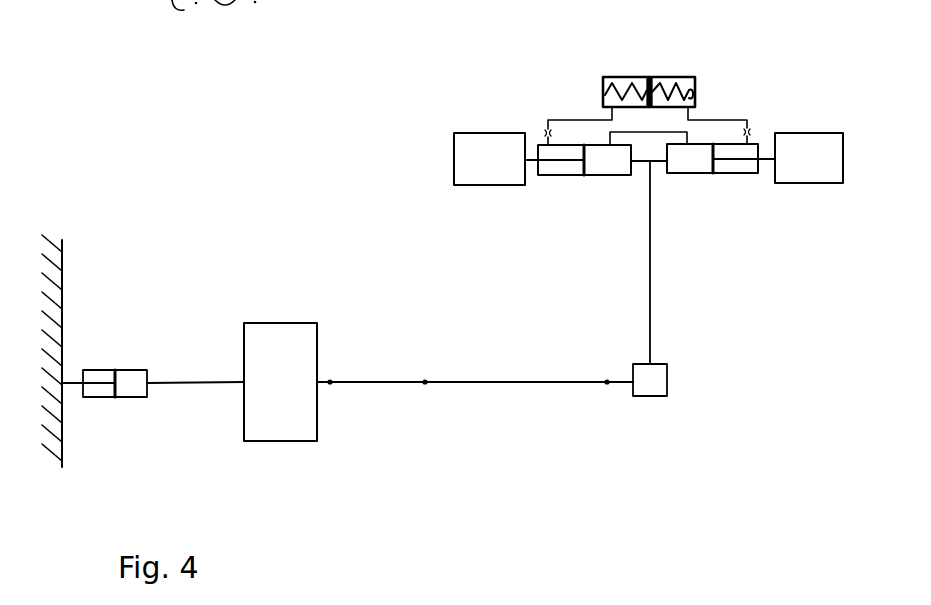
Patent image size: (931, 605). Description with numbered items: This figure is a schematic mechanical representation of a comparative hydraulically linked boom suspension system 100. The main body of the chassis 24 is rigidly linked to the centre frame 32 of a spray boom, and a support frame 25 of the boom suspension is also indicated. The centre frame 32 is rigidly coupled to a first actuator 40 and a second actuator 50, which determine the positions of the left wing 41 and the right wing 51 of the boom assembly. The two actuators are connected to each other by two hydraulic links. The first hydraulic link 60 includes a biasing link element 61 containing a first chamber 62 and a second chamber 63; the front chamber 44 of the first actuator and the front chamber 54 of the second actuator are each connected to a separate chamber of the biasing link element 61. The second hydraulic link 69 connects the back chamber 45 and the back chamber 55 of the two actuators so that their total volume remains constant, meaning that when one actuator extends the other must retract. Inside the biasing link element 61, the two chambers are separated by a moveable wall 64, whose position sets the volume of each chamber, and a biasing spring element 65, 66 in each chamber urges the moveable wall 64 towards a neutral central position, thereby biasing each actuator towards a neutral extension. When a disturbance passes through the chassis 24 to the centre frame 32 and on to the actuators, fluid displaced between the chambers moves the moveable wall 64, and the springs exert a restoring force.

The hydraulically linked boom suspension system 100 is at (320, 91).
The chassis 24 is at (280, 382).
The support frame 25 is at (331, 384).
The centre frame 32 is at (651, 389).
The first actuator 40 is at (562, 175).
The left wing 41 is at (496, 159).
The front chamber 44 is at (547, 170).
The back chamber 45 is at (603, 168).
The second actuator 50 is at (725, 176).
The right wing 51 is at (800, 158).
The front chamber 54 is at (752, 170).
The back chamber 55 is at (690, 167).
The first hydraulic link 60 is at (573, 118).
The biasing link element 61 is at (664, 65).
The first chamber 62 is at (618, 78).
The second chamber 63 is at (682, 82).
The moveable wall 64 is at (648, 77).
The biasing spring element 65 is at (602, 98).
The biasing spring element 66 is at (693, 100).
The second hydraulic link 69 is at (648, 146).